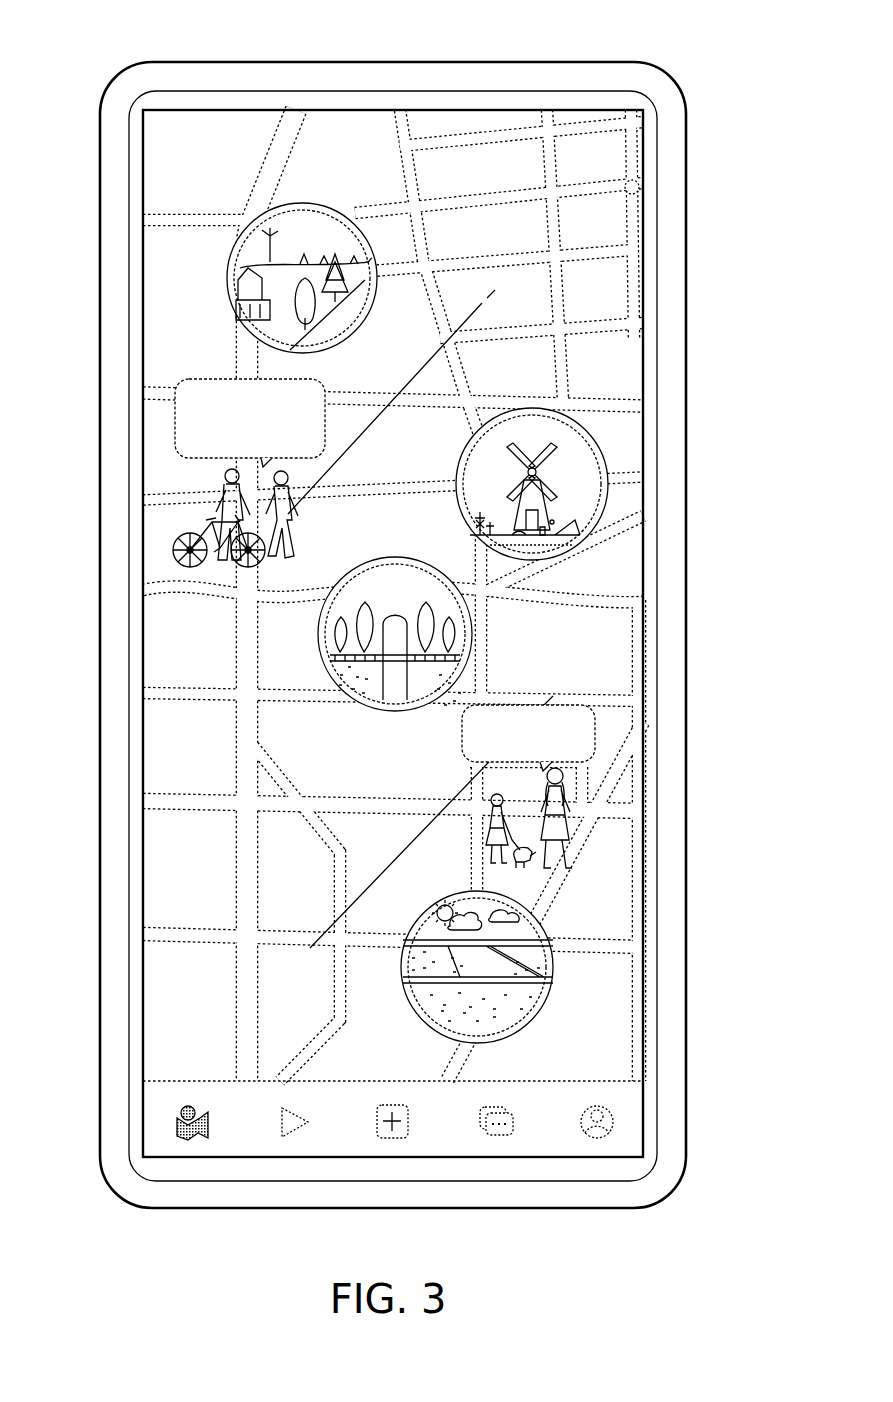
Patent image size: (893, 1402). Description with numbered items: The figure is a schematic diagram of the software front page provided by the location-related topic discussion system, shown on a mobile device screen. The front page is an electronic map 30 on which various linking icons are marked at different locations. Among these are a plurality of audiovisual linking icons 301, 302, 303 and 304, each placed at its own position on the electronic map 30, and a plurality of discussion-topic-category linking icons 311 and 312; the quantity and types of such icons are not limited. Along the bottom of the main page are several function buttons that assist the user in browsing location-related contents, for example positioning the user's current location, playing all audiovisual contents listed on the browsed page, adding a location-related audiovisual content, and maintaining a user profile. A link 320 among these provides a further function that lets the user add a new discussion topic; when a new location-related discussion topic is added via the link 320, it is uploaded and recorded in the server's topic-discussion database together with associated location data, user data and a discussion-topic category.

The electronic map 30 is at (360, 112).
The audiovisual linking icon 301 is at (228, 277).
The audiovisual linking icon 302 is at (607, 458).
The audiovisual linking icon 303 is at (397, 711).
The audiovisual linking icon 304 is at (552, 996).
The discussion-topic-category linking icon 311 is at (158, 420).
The discussion-topic-category linking icon 312 is at (613, 737).
The link 320 is at (500, 1137).